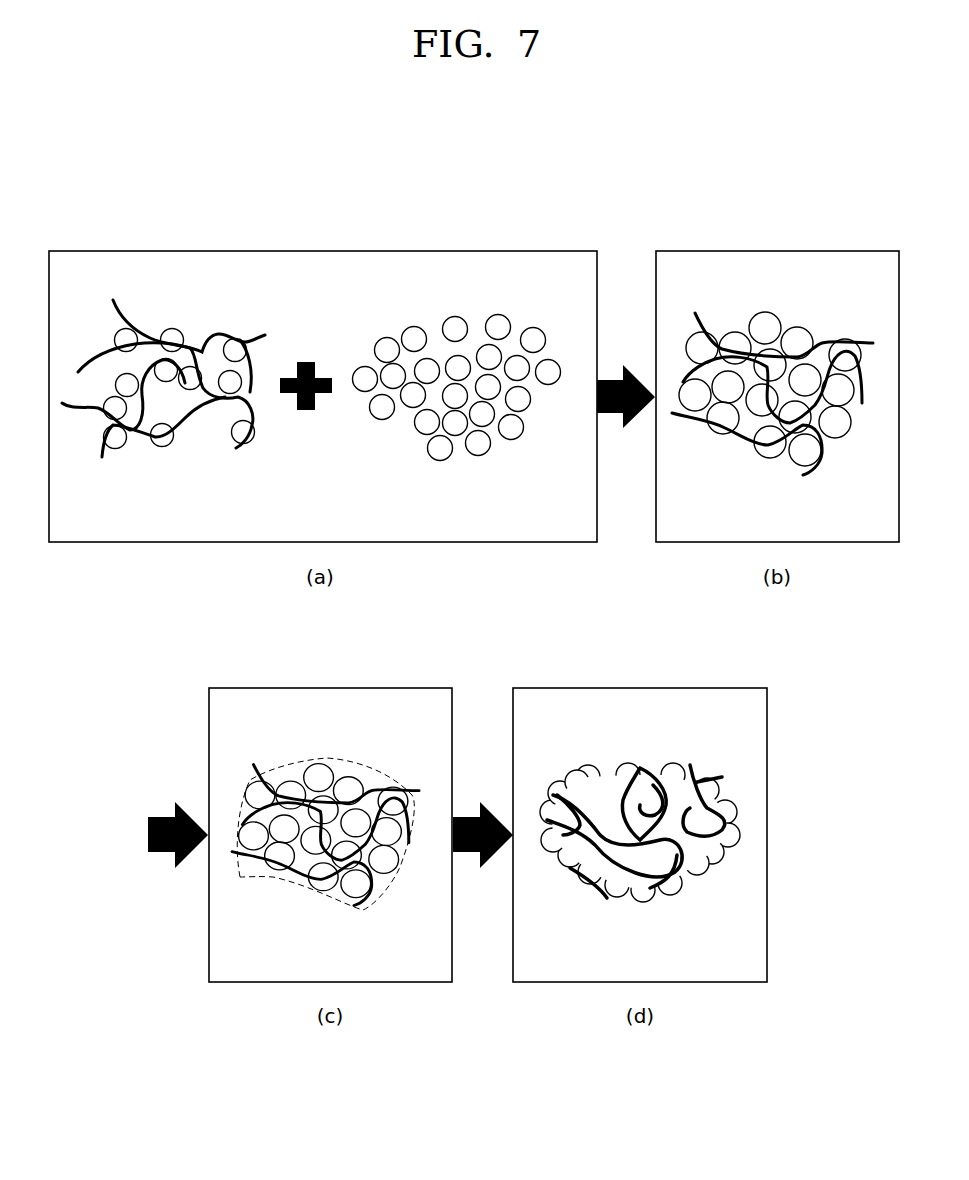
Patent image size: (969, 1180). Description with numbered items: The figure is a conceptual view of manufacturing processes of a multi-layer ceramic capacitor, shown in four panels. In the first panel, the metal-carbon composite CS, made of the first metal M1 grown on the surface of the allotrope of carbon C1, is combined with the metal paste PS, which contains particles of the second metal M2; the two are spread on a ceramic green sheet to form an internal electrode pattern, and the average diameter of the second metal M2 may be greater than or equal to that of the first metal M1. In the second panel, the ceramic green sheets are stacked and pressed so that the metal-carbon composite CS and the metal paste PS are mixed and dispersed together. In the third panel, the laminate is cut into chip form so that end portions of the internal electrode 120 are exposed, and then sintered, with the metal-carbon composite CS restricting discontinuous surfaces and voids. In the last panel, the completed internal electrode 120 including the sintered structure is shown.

The allotrope of carbon C1 is at (98, 350).
The first metal M1 is at (170, 328).
The second metal M2 is at (414, 327).
The metal-carbon composite CS is at (189, 460).
The metal paste PS is at (505, 455).
The internal electrode 120 is at (695, 893).